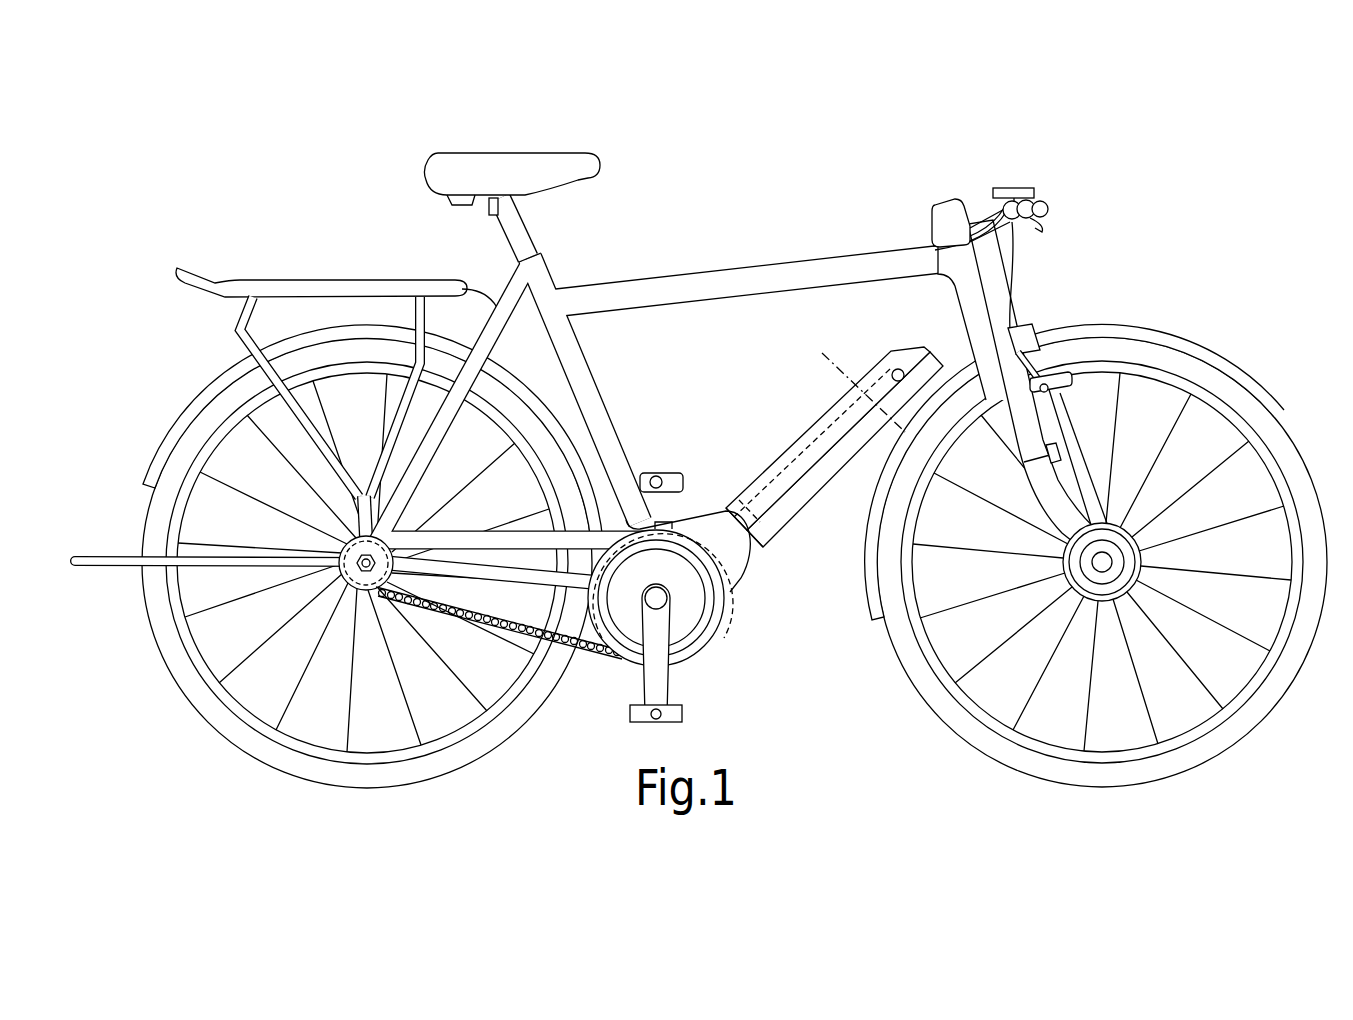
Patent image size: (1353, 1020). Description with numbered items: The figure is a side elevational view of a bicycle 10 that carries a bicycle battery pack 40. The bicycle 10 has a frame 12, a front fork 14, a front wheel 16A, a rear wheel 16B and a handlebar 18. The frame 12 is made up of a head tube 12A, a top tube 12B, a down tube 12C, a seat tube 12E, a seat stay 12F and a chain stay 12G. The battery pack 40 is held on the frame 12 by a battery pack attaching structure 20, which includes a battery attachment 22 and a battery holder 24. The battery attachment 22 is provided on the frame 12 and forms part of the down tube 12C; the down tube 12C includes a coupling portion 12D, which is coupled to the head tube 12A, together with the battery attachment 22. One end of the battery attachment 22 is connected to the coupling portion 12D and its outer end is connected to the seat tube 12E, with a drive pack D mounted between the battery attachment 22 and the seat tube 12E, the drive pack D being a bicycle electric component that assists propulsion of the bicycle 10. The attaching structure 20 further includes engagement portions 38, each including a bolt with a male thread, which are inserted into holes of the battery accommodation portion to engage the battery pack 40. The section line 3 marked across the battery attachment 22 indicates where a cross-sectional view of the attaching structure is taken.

The bicycle 10 is at (701, 419).
The frame 12 is at (517, 376).
The head tube 12A is at (990, 281).
The top tube 12B is at (808, 263).
The down tube 12C is at (751, 396).
The coupling portion 12D is at (947, 328).
The seat tube 12E is at (588, 358).
The seat stay 12F is at (490, 327).
The chain stay 12G is at (437, 529).
The front fork 14 is at (1034, 412).
The front wheel 16A is at (1190, 358).
The rear wheel 16B is at (150, 526).
The handlebar 18 is at (1049, 212).
The battery pack attaching structure 20 is at (691, 588).
The battery attachment 22 is at (758, 478).
The battery holder 24 is at (772, 534).
The engagement portions 38 is at (894, 370).
The bicycle battery pack 40 is at (832, 420).
The section line 3- 3 is at (822, 353).
The drive pack D is at (725, 577).